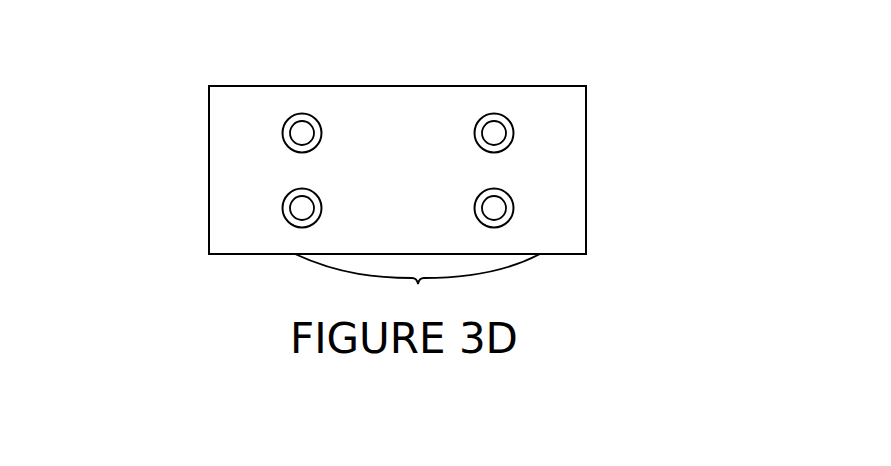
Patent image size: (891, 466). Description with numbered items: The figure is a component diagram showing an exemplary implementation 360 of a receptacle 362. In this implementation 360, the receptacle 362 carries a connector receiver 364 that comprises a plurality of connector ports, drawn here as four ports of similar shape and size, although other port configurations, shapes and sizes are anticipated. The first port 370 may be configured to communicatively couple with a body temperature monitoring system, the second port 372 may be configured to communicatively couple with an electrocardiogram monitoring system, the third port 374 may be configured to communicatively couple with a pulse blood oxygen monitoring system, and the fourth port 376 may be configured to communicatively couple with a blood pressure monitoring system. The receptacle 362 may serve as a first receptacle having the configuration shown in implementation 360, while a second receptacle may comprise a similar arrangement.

The implementation 360 is at (772, 85).
The receptacle 362 is at (586, 128).
The connector receiver 364 is at (417, 282).
The first port 370 is at (316, 119).
The second port 372 is at (508, 118).
The third port 374 is at (513, 213).
The fourth port 376 is at (282, 207).